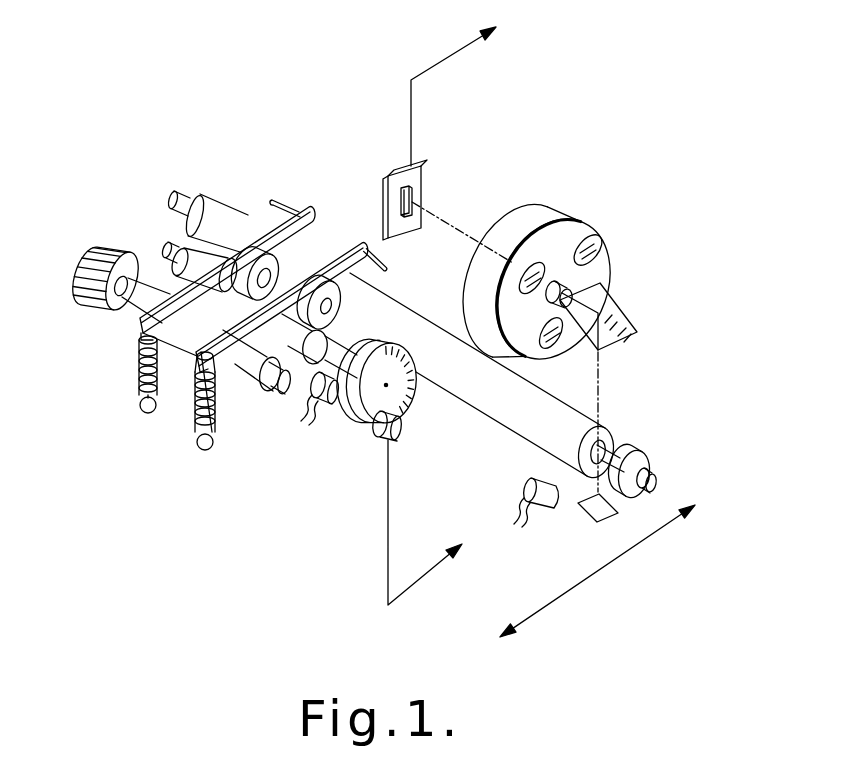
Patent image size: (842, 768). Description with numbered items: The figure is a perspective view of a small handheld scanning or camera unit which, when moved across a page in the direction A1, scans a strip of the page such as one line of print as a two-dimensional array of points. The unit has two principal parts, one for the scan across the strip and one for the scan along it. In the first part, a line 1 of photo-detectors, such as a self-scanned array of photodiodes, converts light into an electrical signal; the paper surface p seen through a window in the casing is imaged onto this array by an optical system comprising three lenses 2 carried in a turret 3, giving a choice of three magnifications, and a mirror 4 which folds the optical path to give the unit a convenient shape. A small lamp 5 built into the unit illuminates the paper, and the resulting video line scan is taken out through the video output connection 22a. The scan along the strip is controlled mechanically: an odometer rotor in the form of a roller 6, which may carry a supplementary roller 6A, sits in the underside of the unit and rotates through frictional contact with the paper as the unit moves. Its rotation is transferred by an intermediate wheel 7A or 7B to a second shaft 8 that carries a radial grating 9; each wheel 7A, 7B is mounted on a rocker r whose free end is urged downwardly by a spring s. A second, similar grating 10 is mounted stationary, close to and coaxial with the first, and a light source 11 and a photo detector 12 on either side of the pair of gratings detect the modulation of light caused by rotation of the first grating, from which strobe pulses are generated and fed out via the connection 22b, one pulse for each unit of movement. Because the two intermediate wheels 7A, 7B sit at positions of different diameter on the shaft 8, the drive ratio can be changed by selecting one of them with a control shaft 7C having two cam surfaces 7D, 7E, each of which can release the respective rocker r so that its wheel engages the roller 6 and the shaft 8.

The line of photo-detectors 1 is at (421, 190).
The lenses 2 is at (551, 316).
The turret 3 is at (530, 216).
The mirror 4 is at (612, 313).
The lamp 5 is at (546, 505).
The roller 6 is at (567, 423).
The supplementary roller 6A is at (637, 452).
The intermediate wheel 7A is at (270, 267).
The intermediate wheel 7B is at (329, 286).
The control shaft 7C is at (137, 307).
The cam surface 7D is at (148, 325).
The cam surface 7E is at (200, 400).
The second shaft 8 is at (284, 392).
The radial grating 9 is at (317, 400).
The second grating 10 is at (362, 420).
The light source 11 is at (303, 340).
The photo detector 12 is at (400, 433).
The video output connection 22a is at (447, 57).
The strobe pulse connection 22b is at (430, 577).
The direction of movement A1 is at (607, 570).
The paper surface p is at (600, 517).
The rocker r is at (238, 262).
The spring s is at (197, 398).